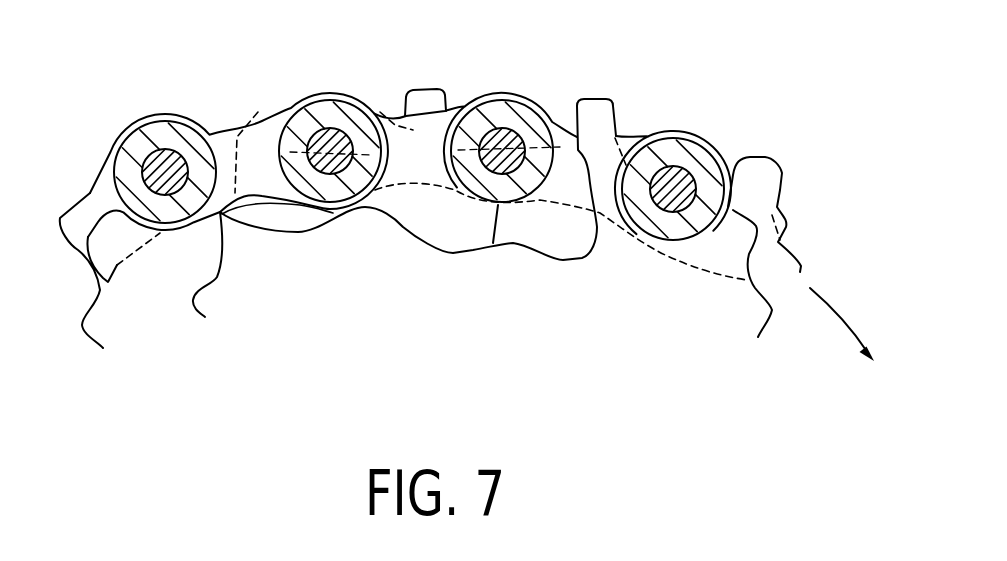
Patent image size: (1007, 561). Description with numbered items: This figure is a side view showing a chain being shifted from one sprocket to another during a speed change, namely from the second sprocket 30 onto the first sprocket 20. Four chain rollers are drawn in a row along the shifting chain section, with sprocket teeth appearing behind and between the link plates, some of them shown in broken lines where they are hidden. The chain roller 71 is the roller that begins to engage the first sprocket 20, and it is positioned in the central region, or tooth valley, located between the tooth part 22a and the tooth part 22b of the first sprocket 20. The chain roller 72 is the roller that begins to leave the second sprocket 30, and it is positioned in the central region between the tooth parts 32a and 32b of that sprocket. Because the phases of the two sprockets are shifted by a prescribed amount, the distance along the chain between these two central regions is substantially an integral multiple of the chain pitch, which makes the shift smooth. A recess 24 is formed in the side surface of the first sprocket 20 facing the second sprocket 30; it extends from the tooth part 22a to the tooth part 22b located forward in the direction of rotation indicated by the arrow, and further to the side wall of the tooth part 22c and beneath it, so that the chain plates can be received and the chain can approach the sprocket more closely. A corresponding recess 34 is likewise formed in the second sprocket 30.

The first sprocket 20 is at (775, 156).
The tooth part 22a is at (107, 226).
The tooth part 22b is at (258, 110).
The tooth part 22c is at (428, 88).
The recess 24 is at (380, 112).
The second sprocket 30 is at (774, 291).
The tooth part 32a is at (403, 170).
The tooth part 32b is at (567, 192).
The recess 34 is at (474, 232).
The chain roller 71 is at (158, 128).
The chain roller 72 is at (530, 113).